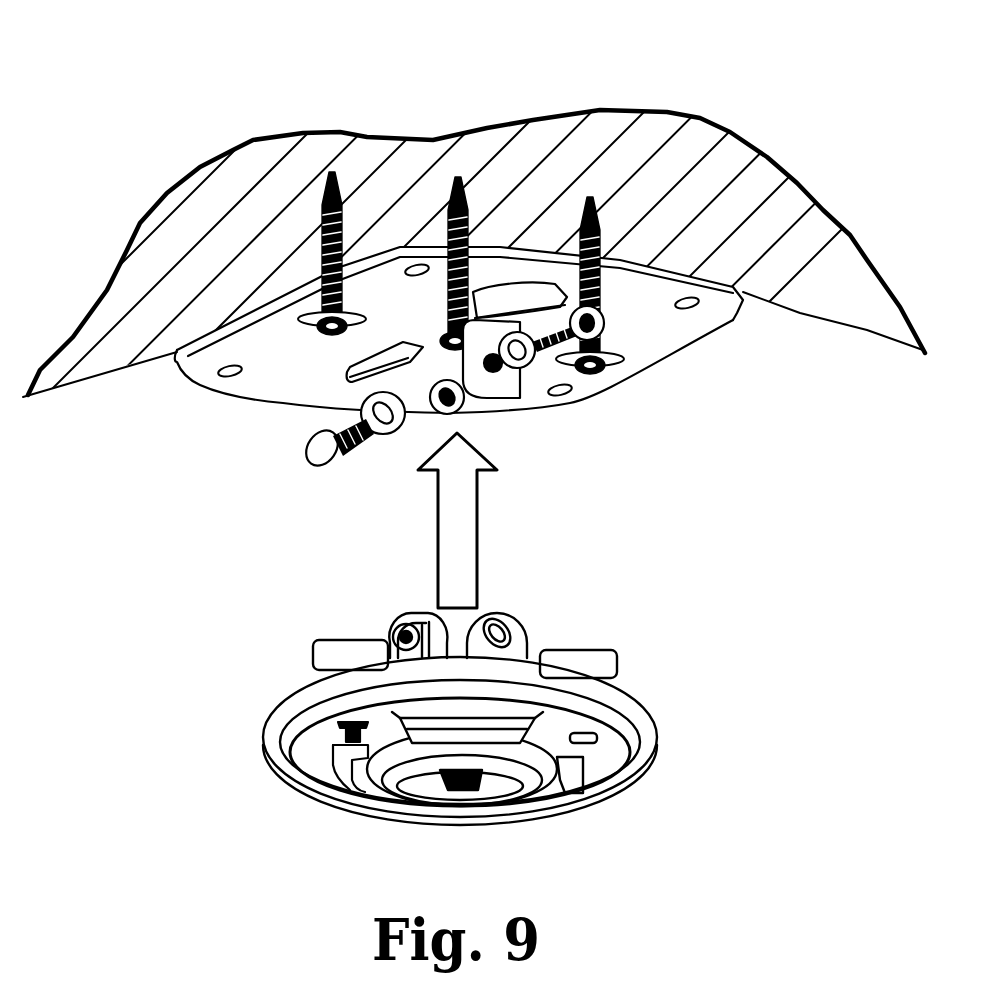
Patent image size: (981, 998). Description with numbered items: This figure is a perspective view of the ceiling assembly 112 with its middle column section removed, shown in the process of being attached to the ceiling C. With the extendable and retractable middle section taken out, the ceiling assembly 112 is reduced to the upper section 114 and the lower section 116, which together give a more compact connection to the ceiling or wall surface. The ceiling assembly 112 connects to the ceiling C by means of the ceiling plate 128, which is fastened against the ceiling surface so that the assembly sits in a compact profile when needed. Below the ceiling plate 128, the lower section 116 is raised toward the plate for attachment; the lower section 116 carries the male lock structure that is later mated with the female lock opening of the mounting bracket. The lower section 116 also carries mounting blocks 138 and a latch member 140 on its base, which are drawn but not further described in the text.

The ceiling C is at (484, 150).
The ceiling assembly 112 is at (753, 420).
The upper section 114 is at (178, 357).
The ceiling plate 128 is at (286, 388).
The lower section 116 is at (623, 715).
The mounting block 138 is at (313, 652).
The latch member 140 is at (328, 780).